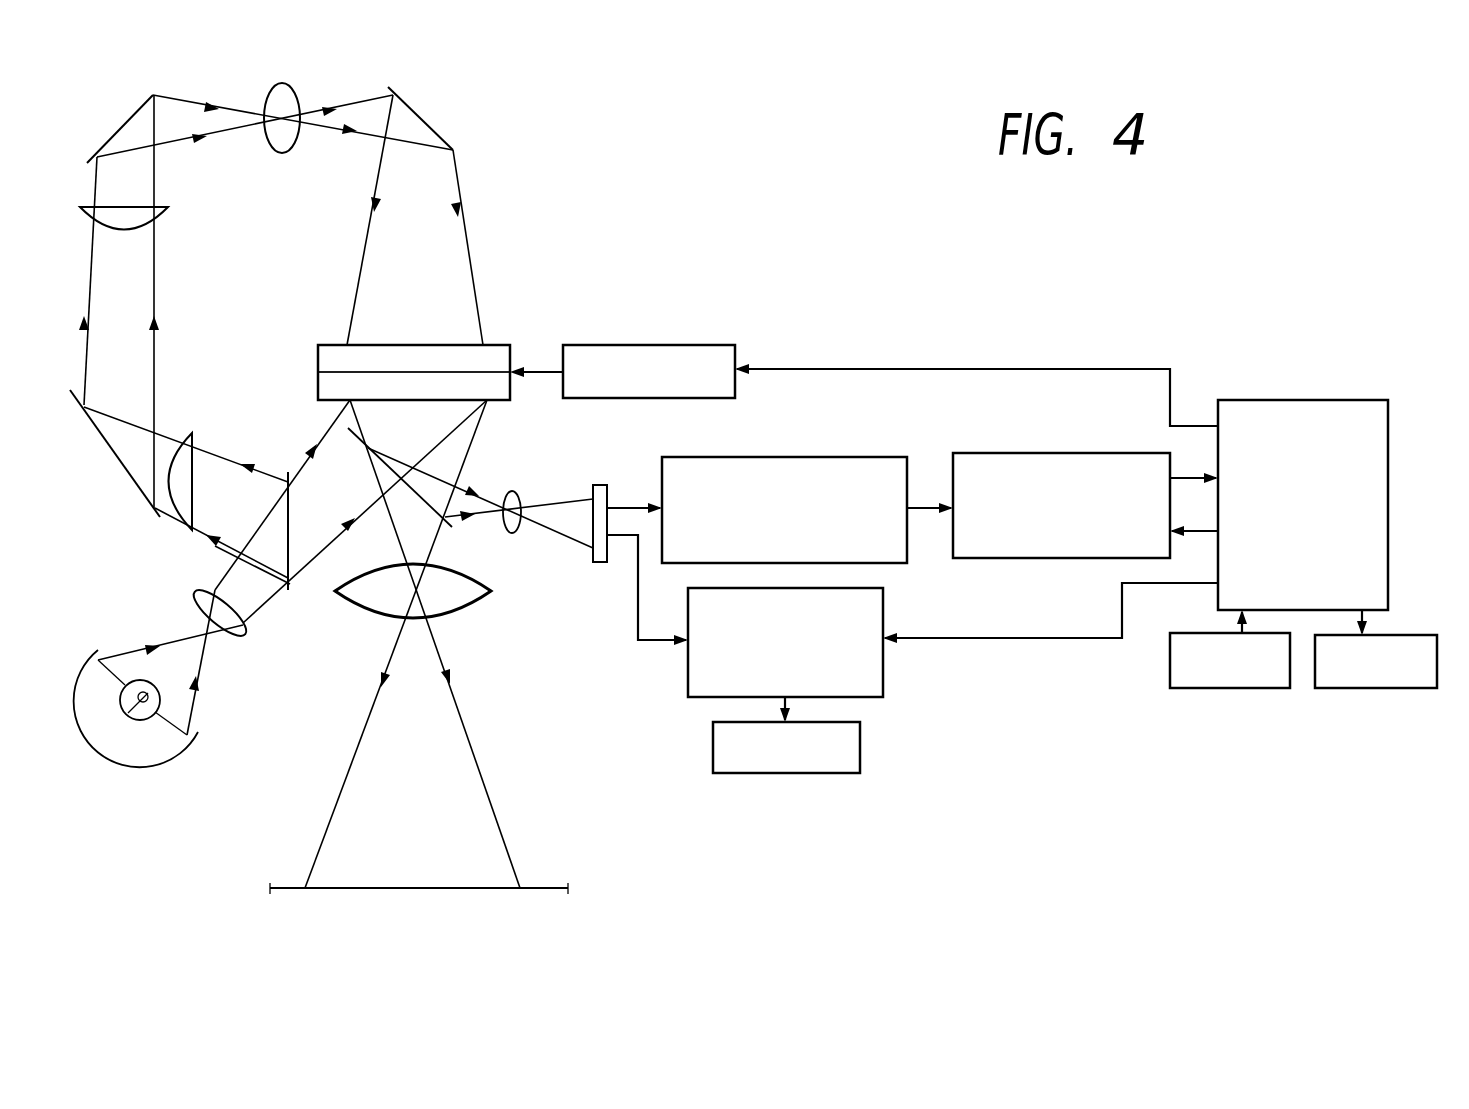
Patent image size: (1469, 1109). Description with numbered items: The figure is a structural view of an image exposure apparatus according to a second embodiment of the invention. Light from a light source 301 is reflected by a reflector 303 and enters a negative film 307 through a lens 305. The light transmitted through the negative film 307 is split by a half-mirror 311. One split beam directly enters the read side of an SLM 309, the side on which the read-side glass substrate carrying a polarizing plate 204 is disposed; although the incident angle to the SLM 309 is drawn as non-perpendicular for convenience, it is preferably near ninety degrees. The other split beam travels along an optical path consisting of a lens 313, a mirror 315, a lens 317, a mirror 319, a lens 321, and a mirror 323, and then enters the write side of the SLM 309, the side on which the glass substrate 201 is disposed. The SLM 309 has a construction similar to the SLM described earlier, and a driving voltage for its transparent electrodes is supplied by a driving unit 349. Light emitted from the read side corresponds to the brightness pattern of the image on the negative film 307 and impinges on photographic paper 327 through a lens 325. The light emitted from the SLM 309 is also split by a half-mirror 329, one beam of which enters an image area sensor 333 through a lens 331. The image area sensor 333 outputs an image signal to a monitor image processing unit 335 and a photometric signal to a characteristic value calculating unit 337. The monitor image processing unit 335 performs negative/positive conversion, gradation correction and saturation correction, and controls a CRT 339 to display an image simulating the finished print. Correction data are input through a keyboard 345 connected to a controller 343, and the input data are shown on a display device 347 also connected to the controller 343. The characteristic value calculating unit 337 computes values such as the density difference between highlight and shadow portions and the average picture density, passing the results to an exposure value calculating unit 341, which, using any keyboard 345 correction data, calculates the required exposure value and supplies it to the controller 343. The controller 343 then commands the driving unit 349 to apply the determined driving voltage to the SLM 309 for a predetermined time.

The glass substrate 201 is at (330, 345).
The polarizing plate 204 is at (500, 402).
The light source 301 is at (125, 723).
The reflector 303 is at (168, 743).
The lens 305 is at (243, 637).
The negative film 307 is at (280, 603).
The SLM 309 is at (511, 344).
The half-mirror 311 is at (292, 508).
The lens 313 is at (196, 436).
The mirror 315 is at (115, 455).
The lens 317 is at (170, 210).
The mirror 319 is at (122, 130).
The lens 321 is at (283, 155).
The mirror 323 is at (412, 105).
The lens 325 is at (488, 592).
The photographic paper 327 is at (552, 883).
The half-mirror 329 is at (392, 466).
The lens 331 is at (513, 532).
The image area sensor 333 is at (602, 483).
The monitor image processing unit 335 is at (885, 613).
The characteristic value calculating unit 337 is at (837, 455).
The CRT 339 is at (862, 748).
The exposure value calculating unit 341 is at (1092, 450).
The controller 343 is at (1313, 398).
The keyboard 345 is at (1227, 688).
The display device 347 is at (1373, 688).
The driving unit 349 is at (678, 343).